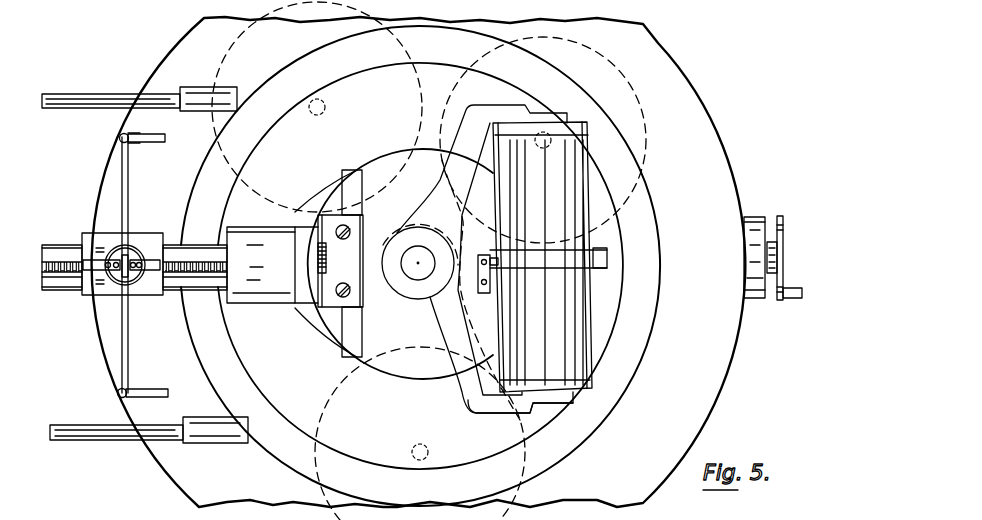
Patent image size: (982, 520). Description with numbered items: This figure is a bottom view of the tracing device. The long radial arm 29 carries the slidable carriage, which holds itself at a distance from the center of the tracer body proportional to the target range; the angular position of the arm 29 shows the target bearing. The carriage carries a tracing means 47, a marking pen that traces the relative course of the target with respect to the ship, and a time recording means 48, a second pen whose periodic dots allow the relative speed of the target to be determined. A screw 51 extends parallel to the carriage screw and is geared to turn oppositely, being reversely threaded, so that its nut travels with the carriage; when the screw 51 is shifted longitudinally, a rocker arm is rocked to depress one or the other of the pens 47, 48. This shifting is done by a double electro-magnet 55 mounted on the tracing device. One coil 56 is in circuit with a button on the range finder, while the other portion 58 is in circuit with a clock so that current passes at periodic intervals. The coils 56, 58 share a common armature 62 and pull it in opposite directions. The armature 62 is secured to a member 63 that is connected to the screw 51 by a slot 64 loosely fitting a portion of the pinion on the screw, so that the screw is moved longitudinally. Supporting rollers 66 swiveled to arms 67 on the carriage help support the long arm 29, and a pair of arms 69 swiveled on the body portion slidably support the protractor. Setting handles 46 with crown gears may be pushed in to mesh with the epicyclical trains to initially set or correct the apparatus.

The arm 29 is at (210, 287).
The setting handle 46 is at (786, 247).
The tracing means 47 is at (122, 264).
The time recording means 48 is at (142, 273).
The screw 51 is at (43, 263).
The double electro-magnet 55 is at (607, 258).
The coil 56 is at (585, 147).
The other portion of the magnet 58 is at (565, 398).
The common armature 62 is at (480, 258).
The member 63 is at (477, 259).
The slot 64 is at (326, 247).
The supporting roller 66 is at (165, 140).
The arm 67 is at (128, 190).
The arm 69 is at (66, 418).